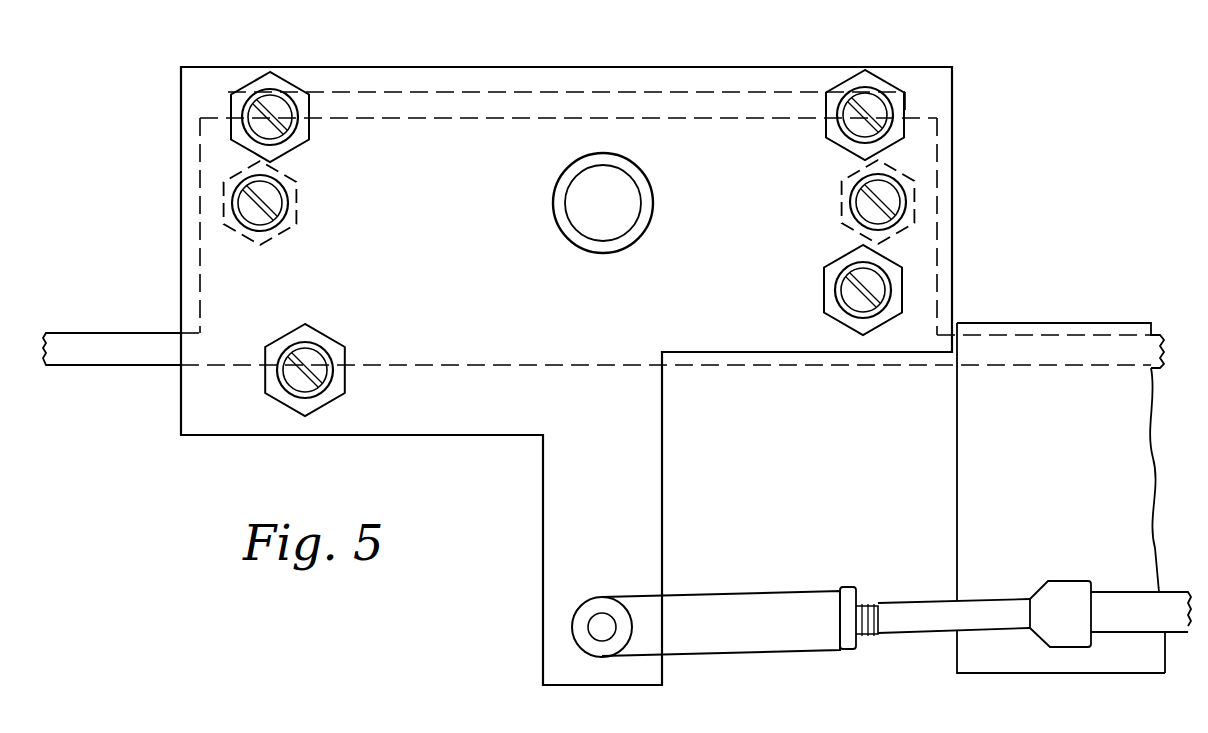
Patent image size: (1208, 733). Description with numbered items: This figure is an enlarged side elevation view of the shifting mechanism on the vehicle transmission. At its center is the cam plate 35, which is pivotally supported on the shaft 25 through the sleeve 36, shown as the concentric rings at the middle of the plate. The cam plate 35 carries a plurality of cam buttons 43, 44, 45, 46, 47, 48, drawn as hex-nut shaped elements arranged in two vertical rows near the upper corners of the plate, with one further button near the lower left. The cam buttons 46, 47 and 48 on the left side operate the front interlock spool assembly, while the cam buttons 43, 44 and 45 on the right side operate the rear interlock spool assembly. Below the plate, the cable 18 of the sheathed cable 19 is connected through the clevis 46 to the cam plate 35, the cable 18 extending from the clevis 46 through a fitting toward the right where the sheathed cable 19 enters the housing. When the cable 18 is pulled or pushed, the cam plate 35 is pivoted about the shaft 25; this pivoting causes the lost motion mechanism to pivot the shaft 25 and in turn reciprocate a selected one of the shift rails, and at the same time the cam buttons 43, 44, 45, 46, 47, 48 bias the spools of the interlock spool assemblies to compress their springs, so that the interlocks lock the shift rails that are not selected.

The cable 18 is at (897, 610).
The sheathed cable 19 is at (1065, 578).
The shaft 25 is at (625, 193).
The cam plate 35 is at (462, 67).
The sleeve 36 is at (568, 224).
The cam button 43 is at (900, 101).
The cam button 44 is at (887, 177).
The cam button 45 is at (885, 268).
The cam button / clevis 46 is at (252, 103).
The cam button 47 is at (272, 222).
The cam button 48 is at (317, 350).